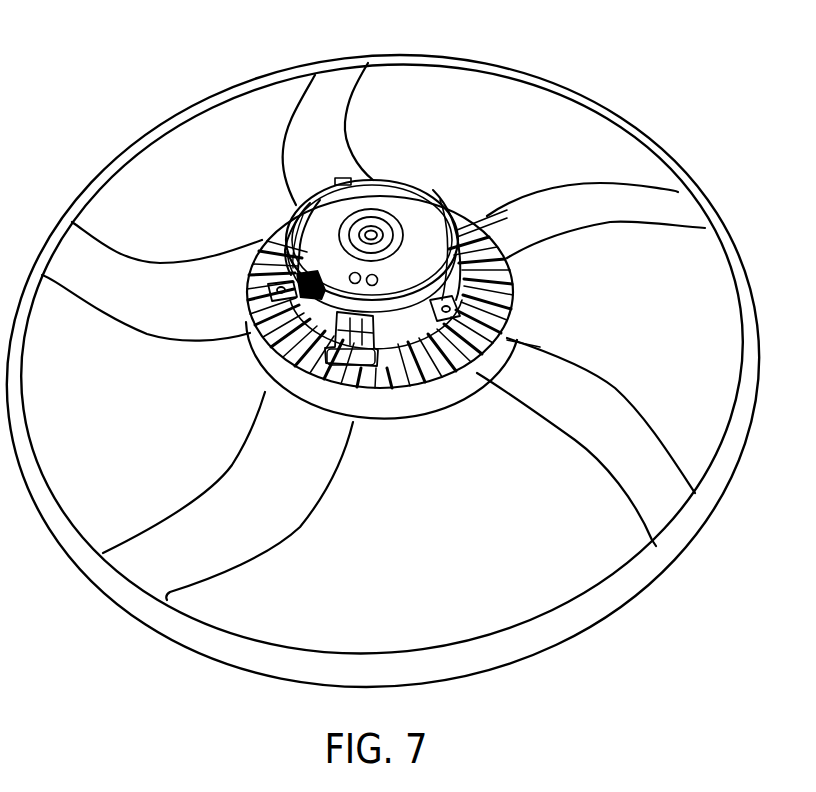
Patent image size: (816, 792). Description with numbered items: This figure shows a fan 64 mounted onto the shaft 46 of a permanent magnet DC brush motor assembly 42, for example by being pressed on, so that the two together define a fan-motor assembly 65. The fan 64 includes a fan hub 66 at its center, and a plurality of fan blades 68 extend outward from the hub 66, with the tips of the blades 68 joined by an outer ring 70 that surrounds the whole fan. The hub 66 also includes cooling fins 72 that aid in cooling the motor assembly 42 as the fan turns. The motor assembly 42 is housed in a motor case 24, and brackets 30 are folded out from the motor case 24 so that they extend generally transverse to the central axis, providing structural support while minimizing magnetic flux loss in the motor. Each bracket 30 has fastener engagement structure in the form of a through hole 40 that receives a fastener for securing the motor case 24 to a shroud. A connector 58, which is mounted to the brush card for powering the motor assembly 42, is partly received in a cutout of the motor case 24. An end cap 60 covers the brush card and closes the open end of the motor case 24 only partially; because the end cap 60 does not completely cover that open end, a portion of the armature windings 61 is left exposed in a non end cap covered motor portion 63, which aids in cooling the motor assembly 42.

The fan-motor assembly 65 is at (76, 124).
The fan 64 is at (580, 86).
The outer ring 70 is at (434, 657).
The fan blades 68 is at (590, 220).
The fan hub 66 is at (440, 397).
The brackets 30 is at (270, 312).
The cooling fins 72 is at (403, 390).
The motor assembly 42 is at (414, 175).
The end cap 60 is at (378, 195).
The shaft 46 is at (368, 235).
The motor case 24 is at (283, 240).
The non end cap covered motor portion 63 is at (449, 236).
The armature windings 61 is at (458, 228).
The through hole 40 is at (271, 292).
The connector 58 is at (350, 393).